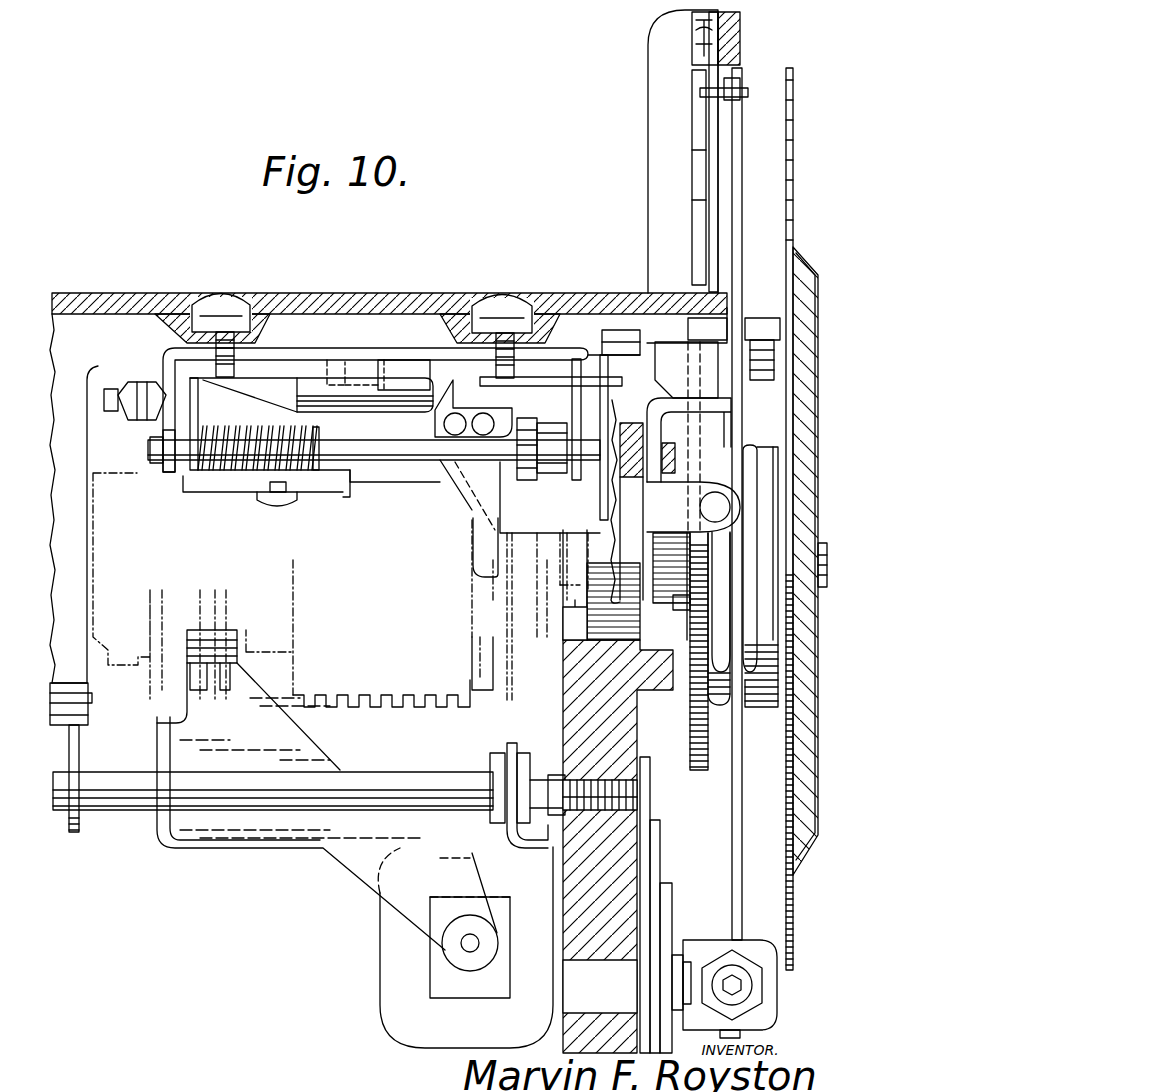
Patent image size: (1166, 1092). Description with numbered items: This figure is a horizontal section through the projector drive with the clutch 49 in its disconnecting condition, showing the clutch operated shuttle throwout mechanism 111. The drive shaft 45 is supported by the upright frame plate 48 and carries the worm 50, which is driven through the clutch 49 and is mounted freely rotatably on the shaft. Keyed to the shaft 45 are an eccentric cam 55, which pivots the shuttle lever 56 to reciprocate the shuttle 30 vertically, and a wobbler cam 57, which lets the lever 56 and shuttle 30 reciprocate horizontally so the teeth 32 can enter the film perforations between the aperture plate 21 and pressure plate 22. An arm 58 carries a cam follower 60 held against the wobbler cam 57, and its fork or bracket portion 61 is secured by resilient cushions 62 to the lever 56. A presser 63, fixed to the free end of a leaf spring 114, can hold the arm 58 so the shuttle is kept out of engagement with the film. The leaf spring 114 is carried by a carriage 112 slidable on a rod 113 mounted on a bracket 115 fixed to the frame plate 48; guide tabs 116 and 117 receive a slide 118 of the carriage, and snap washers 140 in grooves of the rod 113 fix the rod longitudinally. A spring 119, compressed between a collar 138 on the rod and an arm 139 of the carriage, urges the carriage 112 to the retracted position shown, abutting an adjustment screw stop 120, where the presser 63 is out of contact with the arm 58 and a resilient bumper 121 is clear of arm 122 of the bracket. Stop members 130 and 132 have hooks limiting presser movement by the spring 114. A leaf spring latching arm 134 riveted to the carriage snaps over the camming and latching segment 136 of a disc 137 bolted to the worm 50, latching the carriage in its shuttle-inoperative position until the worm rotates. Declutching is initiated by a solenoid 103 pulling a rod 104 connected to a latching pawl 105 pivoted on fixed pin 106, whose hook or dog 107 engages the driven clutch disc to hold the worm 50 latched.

The aperture plate 21 is at (714, 38).
The pressure plate 22 is at (692, 124).
The shuttle 30 is at (720, 80).
The teeth 32 is at (700, 92).
The drive shaft 45 is at (547, 630).
The frame plate 48 is at (342, 297).
The clutch 49 is at (215, 705).
The worm 50 is at (413, 707).
The eccentric cam 55 is at (761, 708).
The shuttle lever 56 is at (740, 143).
The wobbler cam 57 is at (700, 771).
The arm 58 is at (717, 456).
The cam follower 60 is at (702, 345).
The fork or bracket portion 61 is at (775, 318).
The resilient cushions 62 is at (744, 296).
The presser 63 is at (627, 292).
The solenoid 103 is at (388, 972).
The rod 104 is at (466, 943).
The latching pawl 105 is at (250, 830).
The fixed pin 106 is at (115, 800).
The hook portion or dog 107 is at (240, 638).
The shuttle throwout mechanism 111 is at (409, 500).
The carriage 112 is at (370, 483).
The rod 113 is at (437, 462).
The leaf spring 114 is at (606, 428).
The bracket 115 is at (165, 352).
The guide tab 116 is at (355, 359).
The guide tab 117 is at (412, 359).
The slide 118 is at (303, 389).
The spring 119 is at (263, 430).
The adjustment screw stop 120 is at (163, 376).
The resilient bumper 121 is at (541, 484).
The arm 122 is at (571, 420).
The stop member 130 is at (588, 360).
The stop member 132 is at (598, 387).
The leaf spring latching arm 134 is at (483, 528).
The camming and latching segment 136 is at (488, 648).
The disc 137 is at (470, 656).
The collar 138 is at (332, 431).
The arm 139 is at (199, 420).
The spring snap washers 140 is at (157, 470).